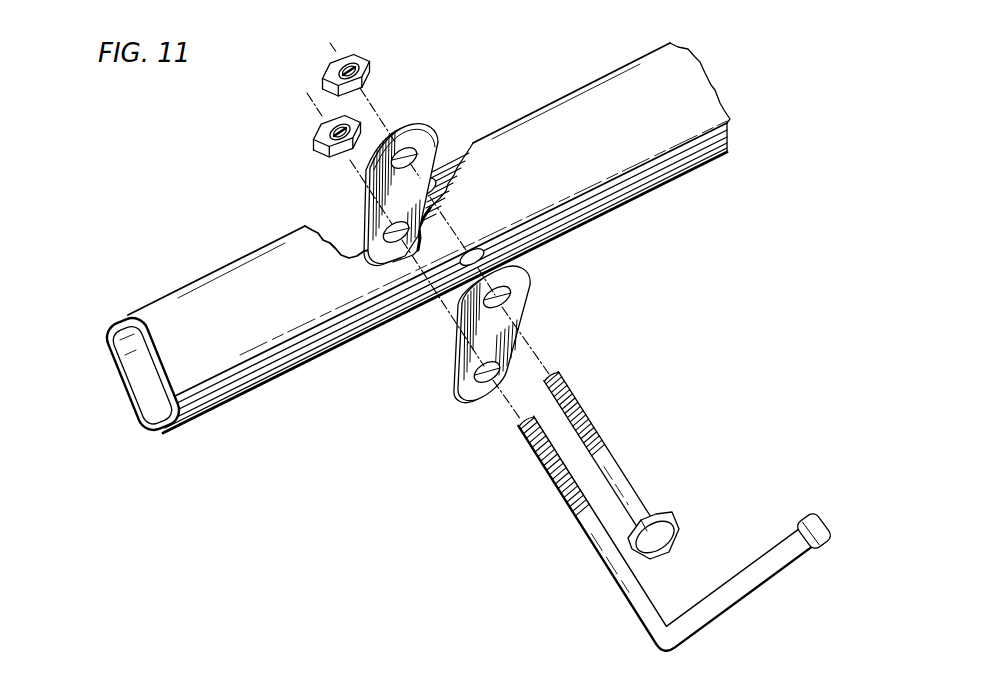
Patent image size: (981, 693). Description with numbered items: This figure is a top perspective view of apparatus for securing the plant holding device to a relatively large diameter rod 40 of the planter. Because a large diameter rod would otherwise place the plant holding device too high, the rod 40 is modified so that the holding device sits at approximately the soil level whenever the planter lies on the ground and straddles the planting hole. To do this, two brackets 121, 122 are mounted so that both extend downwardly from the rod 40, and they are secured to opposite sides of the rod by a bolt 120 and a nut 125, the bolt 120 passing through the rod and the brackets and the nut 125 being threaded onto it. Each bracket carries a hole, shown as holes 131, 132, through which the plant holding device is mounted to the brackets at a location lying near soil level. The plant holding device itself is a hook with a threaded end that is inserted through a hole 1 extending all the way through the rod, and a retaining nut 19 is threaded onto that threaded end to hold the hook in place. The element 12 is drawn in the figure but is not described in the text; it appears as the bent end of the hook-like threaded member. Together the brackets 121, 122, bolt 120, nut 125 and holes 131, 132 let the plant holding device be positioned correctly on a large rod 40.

The hole 1 is at (519, 440).
The bent end of rod 12 is at (828, 526).
The retaining nut 19 is at (312, 140).
The rod 40 is at (646, 168).
The bolt 120 is at (638, 493).
The bracket 121 is at (517, 346).
The bracket 122 is at (390, 178).
The nut 125 is at (369, 57).
The hole 131 is at (477, 396).
The hole 132 is at (379, 236).